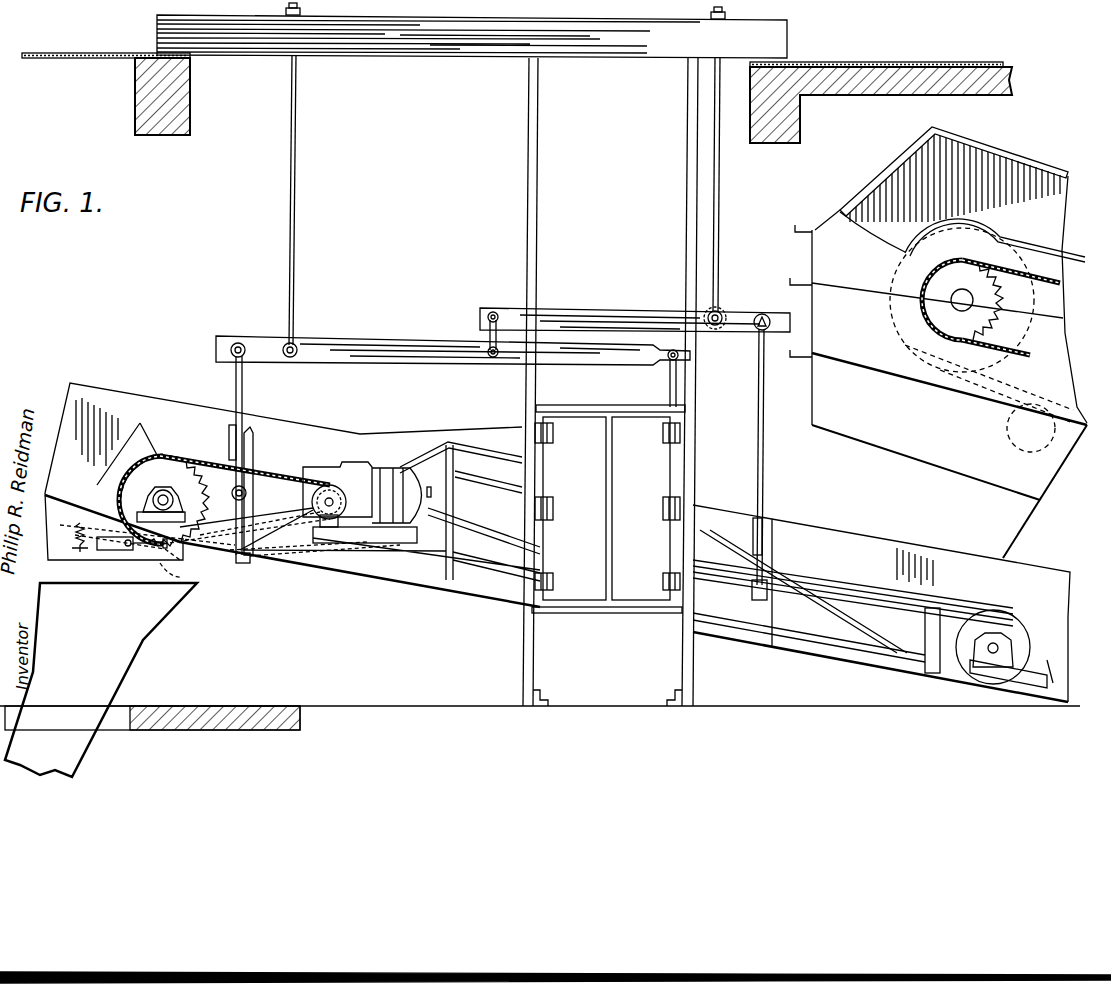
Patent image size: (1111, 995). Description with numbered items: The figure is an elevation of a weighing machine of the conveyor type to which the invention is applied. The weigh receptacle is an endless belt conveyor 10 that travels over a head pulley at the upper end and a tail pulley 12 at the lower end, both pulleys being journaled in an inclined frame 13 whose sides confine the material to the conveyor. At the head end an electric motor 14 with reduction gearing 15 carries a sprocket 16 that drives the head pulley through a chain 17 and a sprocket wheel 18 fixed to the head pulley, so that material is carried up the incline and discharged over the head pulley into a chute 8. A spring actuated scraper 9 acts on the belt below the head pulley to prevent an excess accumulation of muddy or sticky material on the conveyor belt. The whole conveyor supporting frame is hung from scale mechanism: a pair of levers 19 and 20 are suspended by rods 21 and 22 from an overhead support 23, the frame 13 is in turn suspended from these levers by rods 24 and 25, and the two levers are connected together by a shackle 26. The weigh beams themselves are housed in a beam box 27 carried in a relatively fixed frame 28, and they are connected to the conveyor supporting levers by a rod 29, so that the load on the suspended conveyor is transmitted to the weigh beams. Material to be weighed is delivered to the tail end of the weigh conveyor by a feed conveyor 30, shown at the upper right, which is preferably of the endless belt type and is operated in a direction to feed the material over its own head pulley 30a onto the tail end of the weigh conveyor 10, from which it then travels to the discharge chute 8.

The chute 8 is at (128, 630).
The spring actuated scraper 9 is at (134, 557).
The endless belt conveyor 10 is at (266, 476).
The tail pulley 12 is at (996, 632).
The inclined frame 13 is at (380, 572).
The electric motor 14 is at (402, 472).
The reduction gearing 15 is at (340, 463).
The sprocket 16 is at (338, 497).
The chain 17 is at (292, 471).
The sprocket wheel 18 is at (167, 470).
The lever 19 is at (380, 342).
The lever 20 is at (600, 298).
The rod 21 is at (290, 176).
The rod 22 is at (720, 190).
The support 23 is at (410, 52).
The rod 24 is at (235, 384).
The rod 25 is at (757, 375).
The shackle 26 is at (486, 334).
The beam box 27 is at (589, 604).
The relatively fixed frame 28 is at (526, 658).
The rod 29 is at (669, 383).
The feed conveyor 30 is at (1028, 238).
The head pulley 30a is at (925, 246).